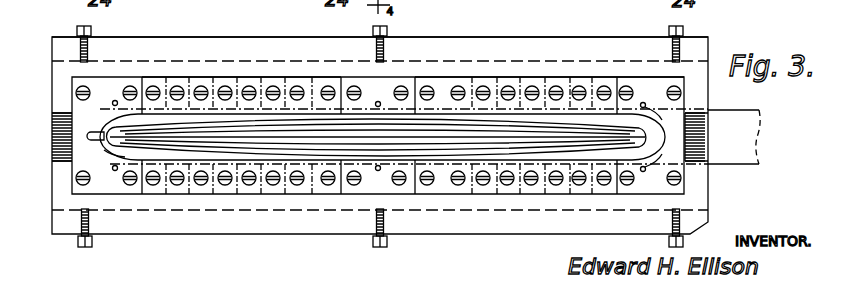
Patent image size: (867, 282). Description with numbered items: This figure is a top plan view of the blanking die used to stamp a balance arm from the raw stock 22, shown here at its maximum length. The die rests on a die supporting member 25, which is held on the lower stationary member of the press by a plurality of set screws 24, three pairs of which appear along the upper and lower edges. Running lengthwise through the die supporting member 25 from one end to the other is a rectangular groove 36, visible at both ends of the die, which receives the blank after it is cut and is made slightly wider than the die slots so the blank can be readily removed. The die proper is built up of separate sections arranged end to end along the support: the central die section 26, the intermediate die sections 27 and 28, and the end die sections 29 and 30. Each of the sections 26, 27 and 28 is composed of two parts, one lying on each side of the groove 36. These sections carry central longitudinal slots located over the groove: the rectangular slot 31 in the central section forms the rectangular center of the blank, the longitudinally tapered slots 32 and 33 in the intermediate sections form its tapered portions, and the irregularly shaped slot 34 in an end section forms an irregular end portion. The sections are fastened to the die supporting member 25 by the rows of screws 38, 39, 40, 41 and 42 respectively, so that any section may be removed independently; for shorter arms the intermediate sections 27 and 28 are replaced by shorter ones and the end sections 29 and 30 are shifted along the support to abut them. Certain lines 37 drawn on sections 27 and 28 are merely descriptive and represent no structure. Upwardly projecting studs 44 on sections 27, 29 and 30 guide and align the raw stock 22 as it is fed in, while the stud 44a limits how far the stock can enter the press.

The raw stock 22 is at (720, 165).
The set screws 24 is at (92, 31).
The die supporting member 25 is at (267, 234).
The die section 26 is at (399, 78).
The die section 27 is at (227, 80).
The die section 28 is at (472, 80).
The die section 29 is at (103, 78).
The die section 30 is at (634, 77).
The slot 31 is at (377, 138).
The slot 32 is at (377, 137).
The slot 33 is at (377, 146).
The slot 34 is at (366, 137).
The rectangular groove 36 is at (63, 112).
The lines 37 is at (290, 37).
The screws 38 is at (396, 88).
The screws 39 is at (199, 87).
The screws 40 is at (579, 86).
The screws 41 is at (88, 90).
The screws 42 is at (679, 82).
The studs 44 is at (113, 106).
The stud 44a is at (110, 157).